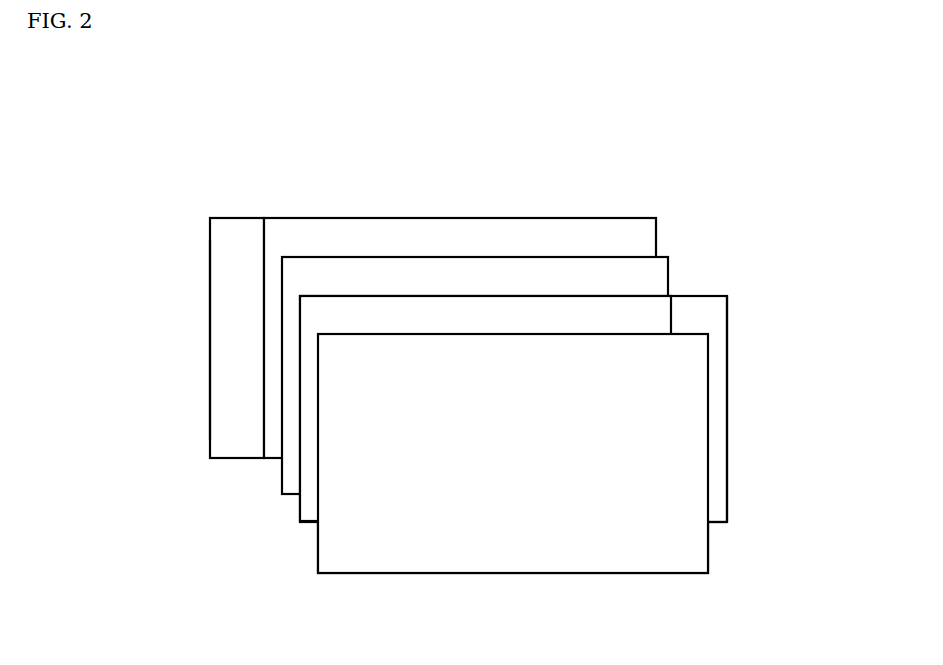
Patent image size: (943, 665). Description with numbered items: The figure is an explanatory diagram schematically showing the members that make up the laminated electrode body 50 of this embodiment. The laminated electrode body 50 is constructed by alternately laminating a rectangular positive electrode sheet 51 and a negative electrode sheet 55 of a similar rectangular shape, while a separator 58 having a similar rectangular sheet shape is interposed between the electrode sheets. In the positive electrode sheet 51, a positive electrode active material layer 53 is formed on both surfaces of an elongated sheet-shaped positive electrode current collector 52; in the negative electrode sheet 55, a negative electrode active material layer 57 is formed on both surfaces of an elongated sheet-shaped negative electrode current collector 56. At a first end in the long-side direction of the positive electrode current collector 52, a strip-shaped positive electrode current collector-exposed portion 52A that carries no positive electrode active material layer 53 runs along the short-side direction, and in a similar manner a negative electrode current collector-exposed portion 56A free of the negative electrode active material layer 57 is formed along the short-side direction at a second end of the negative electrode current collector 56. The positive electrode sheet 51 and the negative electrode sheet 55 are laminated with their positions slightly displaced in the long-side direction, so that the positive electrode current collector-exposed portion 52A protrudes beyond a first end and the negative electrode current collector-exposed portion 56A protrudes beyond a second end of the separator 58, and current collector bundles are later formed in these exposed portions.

The laminated electrode body 50 is at (806, 150).
The positive electrode sheet 51 is at (715, 292).
The positive electrode current collector 52 is at (729, 405).
The positive electrode current collector-exposed portion 52A is at (719, 480).
The positive electrode active material layer 53 is at (305, 510).
The negative electrode sheet 55 is at (566, 214).
The negative electrode current collector 56 is at (242, 217).
The negative electrode current collector-exposed portion 56A is at (211, 292).
The negative electrode active material layer 57 is at (390, 232).
The separator 58 is at (668, 253).